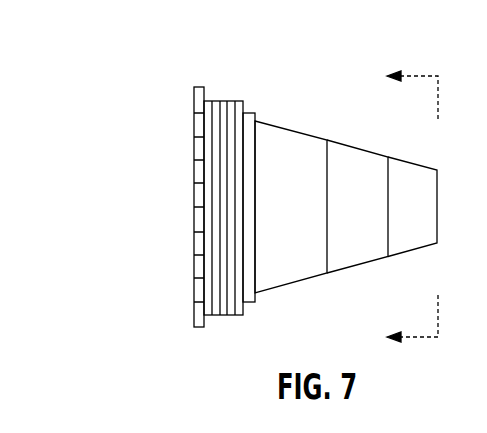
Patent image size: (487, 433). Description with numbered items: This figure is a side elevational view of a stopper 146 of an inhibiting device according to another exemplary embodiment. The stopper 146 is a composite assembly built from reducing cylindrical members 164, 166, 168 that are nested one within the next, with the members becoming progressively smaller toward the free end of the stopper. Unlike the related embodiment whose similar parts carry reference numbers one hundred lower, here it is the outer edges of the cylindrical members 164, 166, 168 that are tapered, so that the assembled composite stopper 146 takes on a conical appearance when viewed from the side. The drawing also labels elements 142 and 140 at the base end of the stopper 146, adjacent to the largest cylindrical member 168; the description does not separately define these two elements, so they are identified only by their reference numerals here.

The stopper 146 is at (174, 70).
The flange 142 is at (198, 246).
The stacked disc section 140 is at (222, 316).
The reducing cylindrical member 168 is at (288, 277).
The reducing cylindrical member 166 is at (348, 250).
The reducing cylindrical member 164 is at (410, 232).